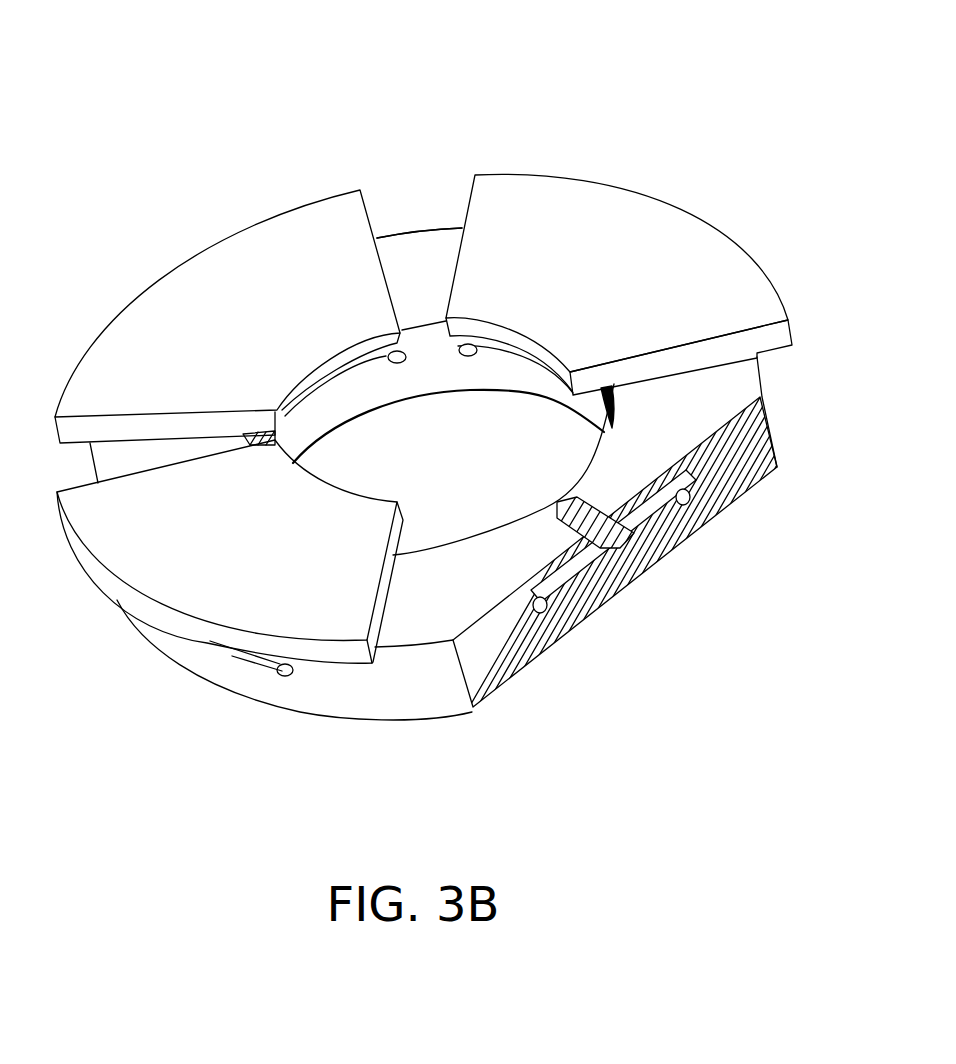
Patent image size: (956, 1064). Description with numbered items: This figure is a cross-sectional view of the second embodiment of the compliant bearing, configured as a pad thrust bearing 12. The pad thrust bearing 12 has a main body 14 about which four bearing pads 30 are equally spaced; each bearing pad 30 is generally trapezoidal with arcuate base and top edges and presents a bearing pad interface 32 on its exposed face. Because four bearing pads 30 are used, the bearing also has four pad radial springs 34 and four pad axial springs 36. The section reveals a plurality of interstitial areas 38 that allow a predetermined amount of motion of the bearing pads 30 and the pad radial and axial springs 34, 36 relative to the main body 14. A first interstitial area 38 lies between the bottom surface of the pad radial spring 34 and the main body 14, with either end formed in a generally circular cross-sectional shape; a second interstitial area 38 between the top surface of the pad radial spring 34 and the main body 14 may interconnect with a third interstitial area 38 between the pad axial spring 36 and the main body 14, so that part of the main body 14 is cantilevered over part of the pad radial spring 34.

The pad thrust bearing 12 is at (252, 162).
The main body 14 is at (420, 248).
The bearing pad 30 is at (270, 640).
The bearing pad interface 32 is at (167, 295).
The pad radial spring 34 is at (612, 516).
The pad axial spring 36 is at (573, 500).
The interstitial area 38 is at (468, 352).